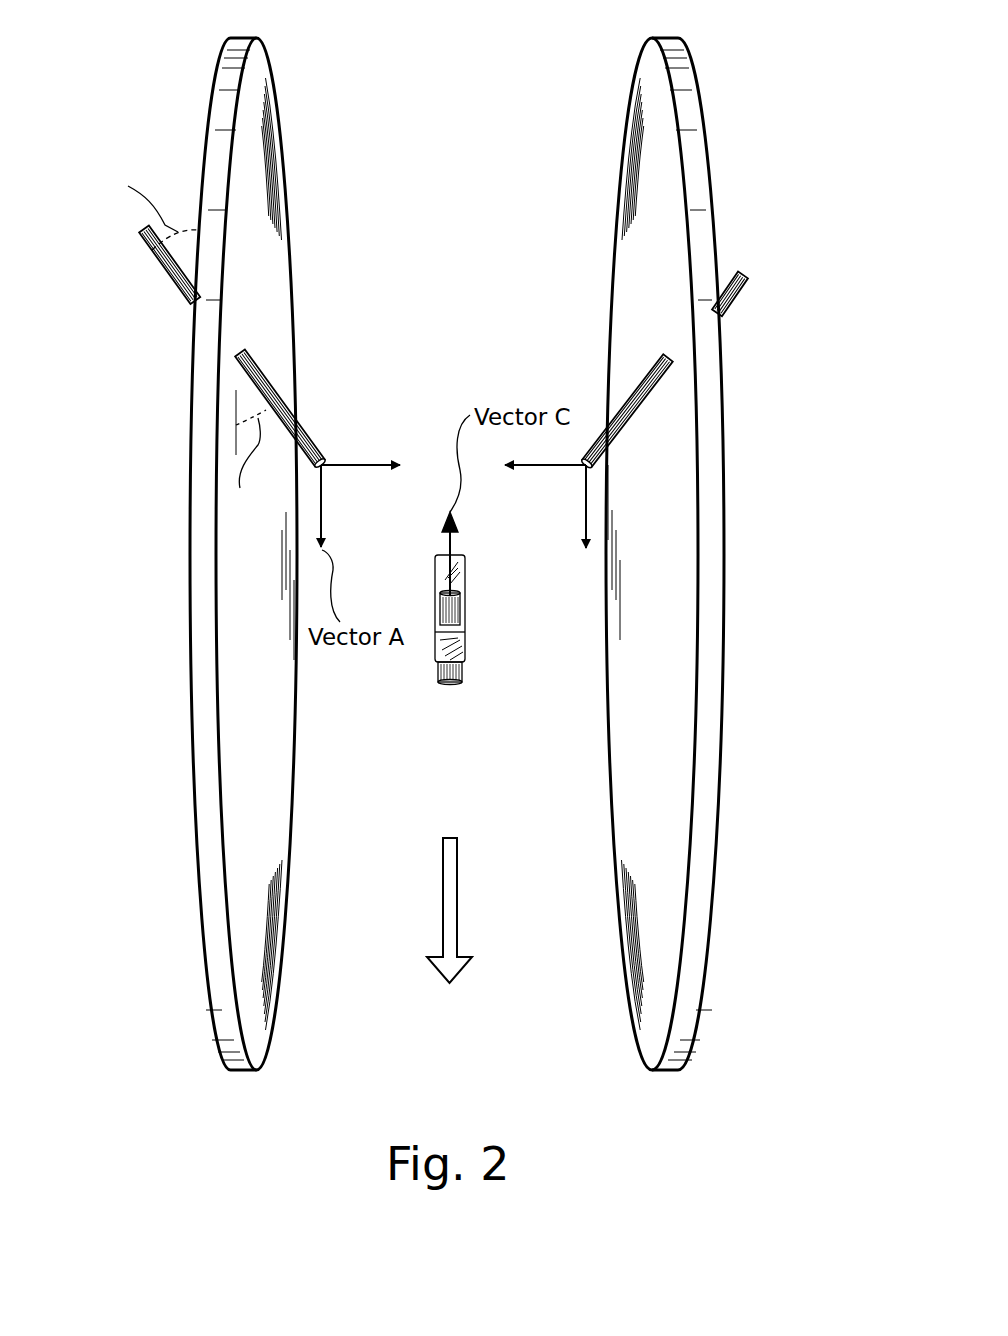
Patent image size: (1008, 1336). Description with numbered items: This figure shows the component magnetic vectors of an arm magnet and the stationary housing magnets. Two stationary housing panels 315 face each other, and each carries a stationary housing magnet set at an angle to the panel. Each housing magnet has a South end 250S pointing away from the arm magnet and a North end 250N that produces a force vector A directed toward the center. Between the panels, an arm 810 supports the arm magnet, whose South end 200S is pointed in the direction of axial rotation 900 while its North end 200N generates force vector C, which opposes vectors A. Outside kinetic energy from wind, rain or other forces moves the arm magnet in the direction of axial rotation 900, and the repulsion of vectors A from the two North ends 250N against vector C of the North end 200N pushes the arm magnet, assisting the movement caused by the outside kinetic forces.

The stationary housing panel 315 is at (225, 40).
The South end of stationary housing magnet 250S is at (142, 238).
The North end of stationary housing magnet 250N is at (305, 432).
The arm 810 is at (456, 642).
The North end of arm magnet 200N is at (460, 597).
The South end of arm magnet 200S is at (452, 683).
The direction of axial rotation 900 is at (457, 905).